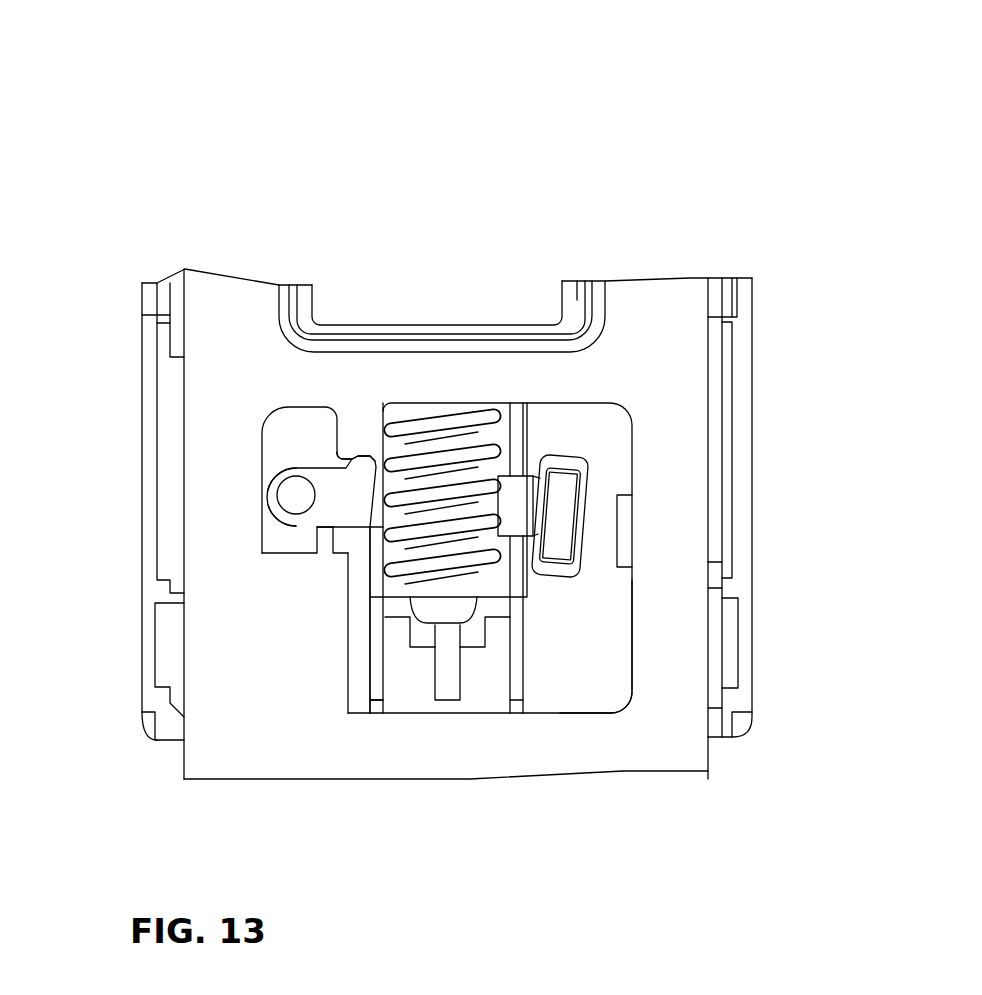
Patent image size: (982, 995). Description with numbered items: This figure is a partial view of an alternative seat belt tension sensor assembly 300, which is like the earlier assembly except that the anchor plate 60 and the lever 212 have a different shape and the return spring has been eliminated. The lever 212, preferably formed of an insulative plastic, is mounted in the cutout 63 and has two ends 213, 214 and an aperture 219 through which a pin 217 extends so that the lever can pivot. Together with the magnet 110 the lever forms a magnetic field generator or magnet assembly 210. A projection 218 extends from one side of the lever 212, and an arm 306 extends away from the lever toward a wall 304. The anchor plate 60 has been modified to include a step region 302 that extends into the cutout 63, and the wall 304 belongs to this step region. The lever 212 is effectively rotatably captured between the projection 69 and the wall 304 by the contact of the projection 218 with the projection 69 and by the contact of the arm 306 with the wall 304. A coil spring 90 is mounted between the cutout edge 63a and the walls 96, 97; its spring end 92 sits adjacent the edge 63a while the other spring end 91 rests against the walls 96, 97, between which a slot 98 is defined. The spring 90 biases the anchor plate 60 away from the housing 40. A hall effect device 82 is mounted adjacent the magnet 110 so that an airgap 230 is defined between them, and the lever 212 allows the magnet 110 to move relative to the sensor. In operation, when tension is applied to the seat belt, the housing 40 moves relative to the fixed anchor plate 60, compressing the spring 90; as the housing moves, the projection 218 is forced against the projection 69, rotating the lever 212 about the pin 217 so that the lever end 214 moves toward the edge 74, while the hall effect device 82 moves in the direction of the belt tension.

The seat belt tension sensor assembly 300 is at (150, 100).
The cutout edge 63a is at (402, 403).
The projection 69 is at (355, 432).
The coil spring 90 is at (450, 423).
The spring end 92 is at (482, 422).
The lever end 214 is at (570, 462).
The magnet assembly 210 is at (668, 370).
The projection 218 is at (352, 462).
The lever end 213 is at (343, 470).
The pin 217 is at (277, 469).
The aperture 219 is at (298, 494).
The lever 212 is at (268, 523).
The arm 306 is at (320, 535).
The step region 302 is at (267, 630).
The housing 40 is at (141, 695).
The anchor plate 60 is at (247, 780).
The wall 304 is at (317, 560).
The wall 97 is at (400, 607).
The spring end 91 is at (437, 600).
The slot 98 is at (458, 612).
The wall 96 is at (503, 607).
The edge 74 is at (603, 712).
The cutout 63 is at (597, 652).
The magnet 110 is at (578, 493).
The hall effect device 82 is at (623, 532).
The airgap 230 is at (600, 528).